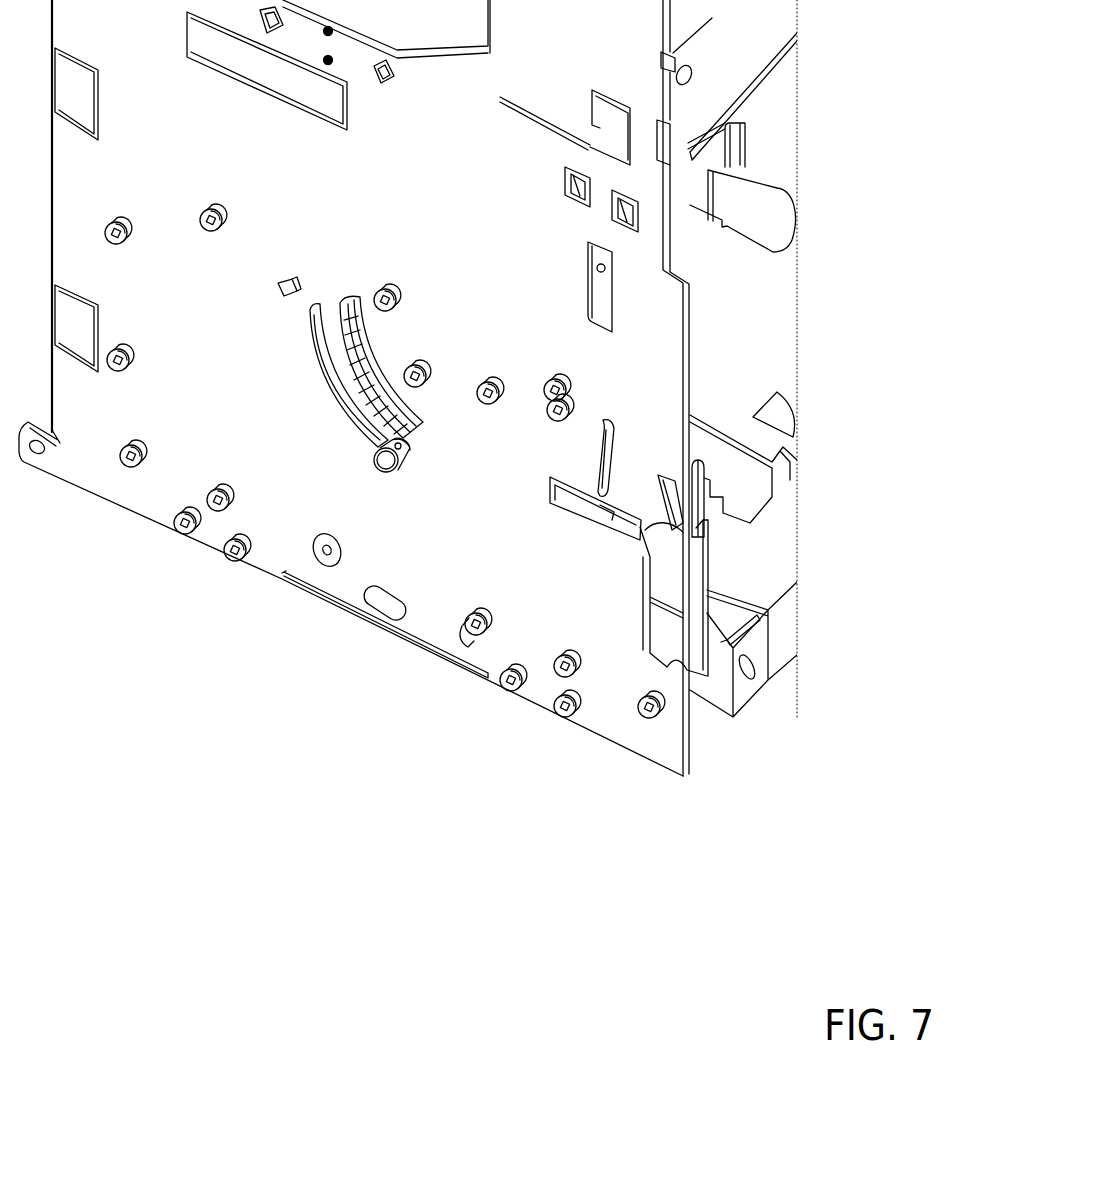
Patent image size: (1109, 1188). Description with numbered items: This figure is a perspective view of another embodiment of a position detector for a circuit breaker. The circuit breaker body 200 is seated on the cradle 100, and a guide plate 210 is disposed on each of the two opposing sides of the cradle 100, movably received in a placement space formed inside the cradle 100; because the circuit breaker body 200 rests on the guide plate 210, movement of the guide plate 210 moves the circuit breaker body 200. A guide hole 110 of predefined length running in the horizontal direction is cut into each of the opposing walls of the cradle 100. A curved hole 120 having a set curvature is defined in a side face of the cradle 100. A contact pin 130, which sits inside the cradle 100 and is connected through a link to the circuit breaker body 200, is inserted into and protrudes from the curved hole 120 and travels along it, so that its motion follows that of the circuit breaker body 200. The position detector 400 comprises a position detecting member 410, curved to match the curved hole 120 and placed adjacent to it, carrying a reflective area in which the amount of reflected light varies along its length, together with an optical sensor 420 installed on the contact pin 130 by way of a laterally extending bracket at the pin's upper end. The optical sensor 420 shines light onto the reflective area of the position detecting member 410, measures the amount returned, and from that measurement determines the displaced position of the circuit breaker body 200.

The cradle 100 is at (665, 317).
The guide hole 110 is at (582, 516).
The curved hole 120 is at (187, 522).
The contact pin 130 is at (385, 472).
The circuit breaker body 200 is at (738, 402).
The guide plate 210 is at (665, 570).
The position detector 400 is at (507, 413).
The position detecting member 410 is at (403, 415).
The optical sensor 420 is at (405, 456).